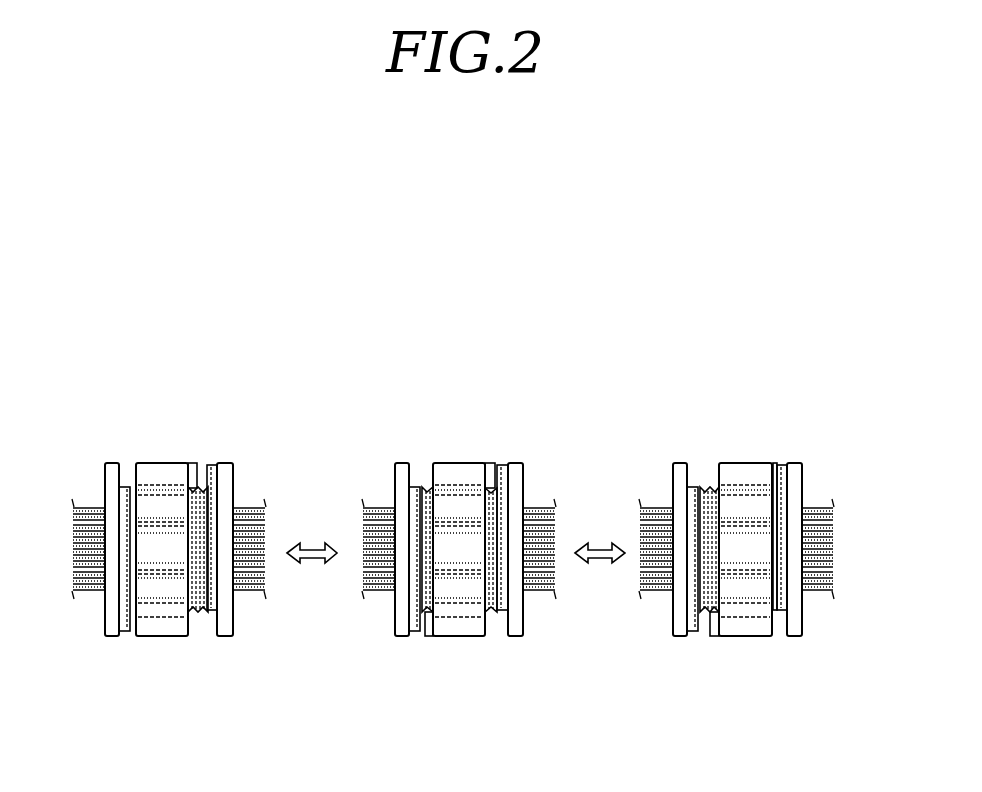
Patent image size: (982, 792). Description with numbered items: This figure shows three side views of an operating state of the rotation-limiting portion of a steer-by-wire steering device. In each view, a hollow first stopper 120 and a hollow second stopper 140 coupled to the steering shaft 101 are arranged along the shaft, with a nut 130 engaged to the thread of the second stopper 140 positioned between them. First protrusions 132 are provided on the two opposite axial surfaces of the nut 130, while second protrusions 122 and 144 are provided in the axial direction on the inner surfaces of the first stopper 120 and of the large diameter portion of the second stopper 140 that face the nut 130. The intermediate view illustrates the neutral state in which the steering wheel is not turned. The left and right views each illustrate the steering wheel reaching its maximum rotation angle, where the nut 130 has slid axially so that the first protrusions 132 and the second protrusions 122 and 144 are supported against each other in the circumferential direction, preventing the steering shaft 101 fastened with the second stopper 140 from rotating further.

The steering shaft 101 is at (380, 520).
The first stopper 120 is at (540, 553).
The second protrusion 122 is at (505, 467).
The nut 130 is at (454, 554).
The first protrusions 132 is at (135, 637).
The second stopper 140 is at (493, 663).
The second protrusion 144 is at (118, 621).